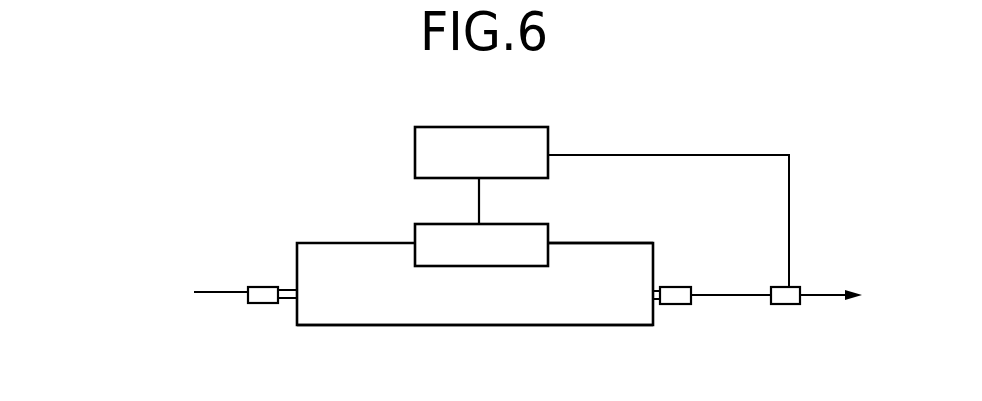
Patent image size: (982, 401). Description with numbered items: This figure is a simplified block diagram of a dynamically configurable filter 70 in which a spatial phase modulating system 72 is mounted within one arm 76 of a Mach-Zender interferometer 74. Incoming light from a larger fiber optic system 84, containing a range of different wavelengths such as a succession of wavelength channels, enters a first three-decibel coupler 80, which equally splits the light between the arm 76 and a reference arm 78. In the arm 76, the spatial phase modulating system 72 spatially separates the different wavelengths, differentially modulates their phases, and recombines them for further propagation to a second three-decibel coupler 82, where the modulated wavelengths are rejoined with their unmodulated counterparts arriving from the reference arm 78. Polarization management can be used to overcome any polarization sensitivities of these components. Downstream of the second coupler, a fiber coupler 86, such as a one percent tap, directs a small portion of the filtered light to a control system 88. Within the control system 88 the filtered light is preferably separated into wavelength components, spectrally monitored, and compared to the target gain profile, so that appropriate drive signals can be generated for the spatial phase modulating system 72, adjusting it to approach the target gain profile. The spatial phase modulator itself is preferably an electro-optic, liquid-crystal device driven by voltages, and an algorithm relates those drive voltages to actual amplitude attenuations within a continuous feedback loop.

The dynamically configurable filter 70 is at (353, 141).
The spatial phase modulating system 72 is at (469, 258).
The Mach-Zender interferometer 74 is at (328, 236).
The arm 76 is at (638, 244).
The reference arm 78 is at (538, 325).
The first 3 dB coupler 80 is at (263, 287).
The second 3 dB coupler 82 is at (685, 287).
The larger fiber optic system 84 is at (208, 293).
The fiber coupler 86 is at (786, 305).
The control system 88 is at (469, 163).